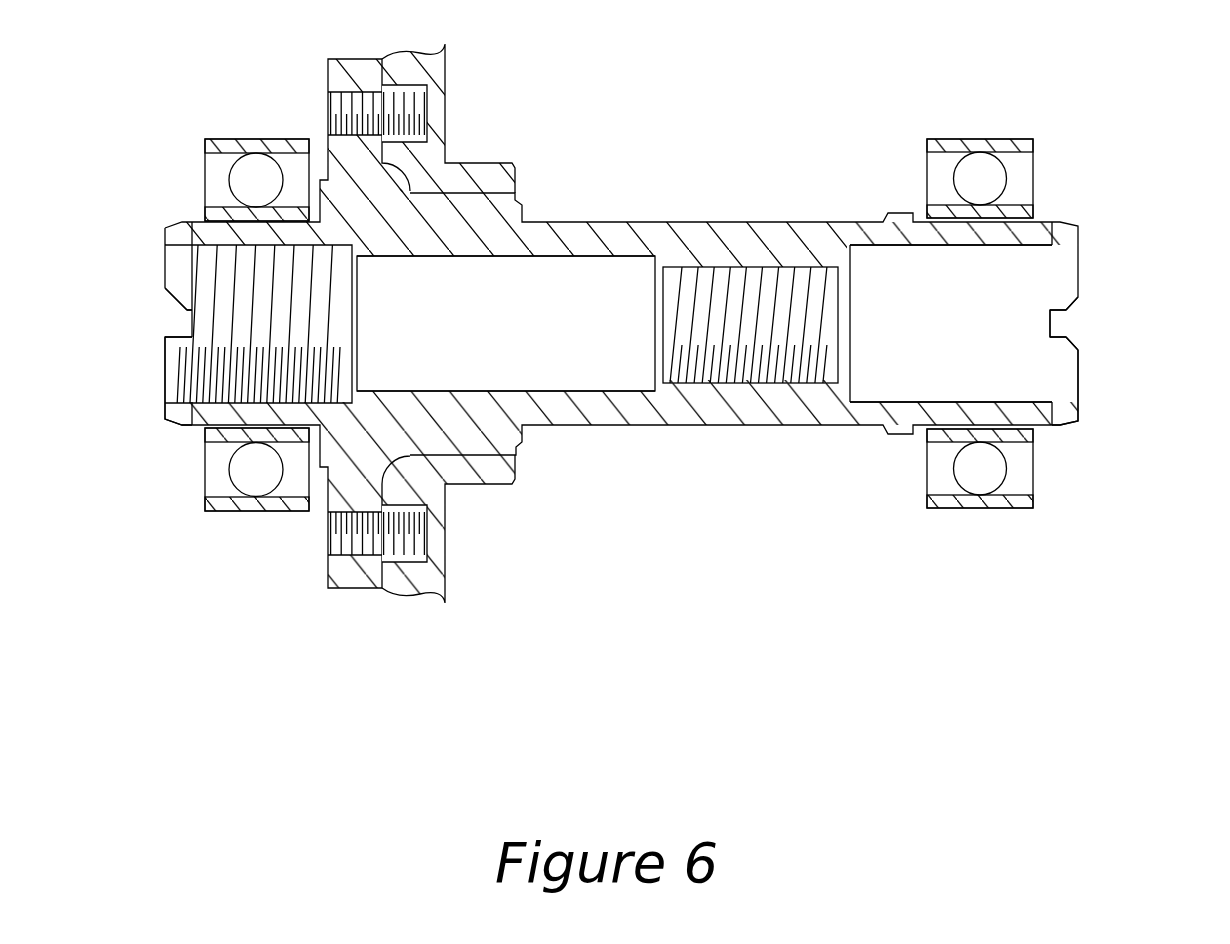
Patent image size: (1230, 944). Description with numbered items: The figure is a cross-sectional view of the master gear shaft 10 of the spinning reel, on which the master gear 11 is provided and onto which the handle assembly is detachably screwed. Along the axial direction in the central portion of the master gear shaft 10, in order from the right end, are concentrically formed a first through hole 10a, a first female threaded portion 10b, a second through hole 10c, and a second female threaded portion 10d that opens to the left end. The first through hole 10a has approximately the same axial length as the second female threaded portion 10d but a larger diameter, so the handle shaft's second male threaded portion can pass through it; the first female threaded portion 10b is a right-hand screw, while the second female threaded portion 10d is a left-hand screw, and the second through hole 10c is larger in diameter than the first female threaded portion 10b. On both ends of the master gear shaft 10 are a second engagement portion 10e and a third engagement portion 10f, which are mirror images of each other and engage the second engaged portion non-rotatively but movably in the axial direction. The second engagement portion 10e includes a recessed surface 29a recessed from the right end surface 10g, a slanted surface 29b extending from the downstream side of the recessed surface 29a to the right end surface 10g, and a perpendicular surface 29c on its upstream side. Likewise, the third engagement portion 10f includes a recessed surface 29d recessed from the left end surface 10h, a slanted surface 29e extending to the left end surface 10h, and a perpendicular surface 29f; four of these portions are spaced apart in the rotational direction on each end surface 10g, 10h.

The master gear shaft 10 is at (672, 204).
The first through hole 10a is at (1007, 250).
The first female threaded portion 10b is at (762, 268).
The second through hole 10c is at (560, 265).
The second female threaded portion 10d is at (235, 247).
The second engagement portion 10e is at (1070, 311).
The third engagement portion 10f is at (170, 312).
The right end surface 10g is at (1080, 386).
The left end surface 10h is at (163, 388).
The master gear 11 is at (467, 180).
The recessed surface 29a is at (1057, 324).
The slanted surface 29b is at (1082, 305).
The perpendicular surface 29c is at (1083, 334).
The recessed surface 29d is at (190, 326).
The slanted surface 29e is at (175, 306).
The perpendicular surface 29f is at (182, 331).